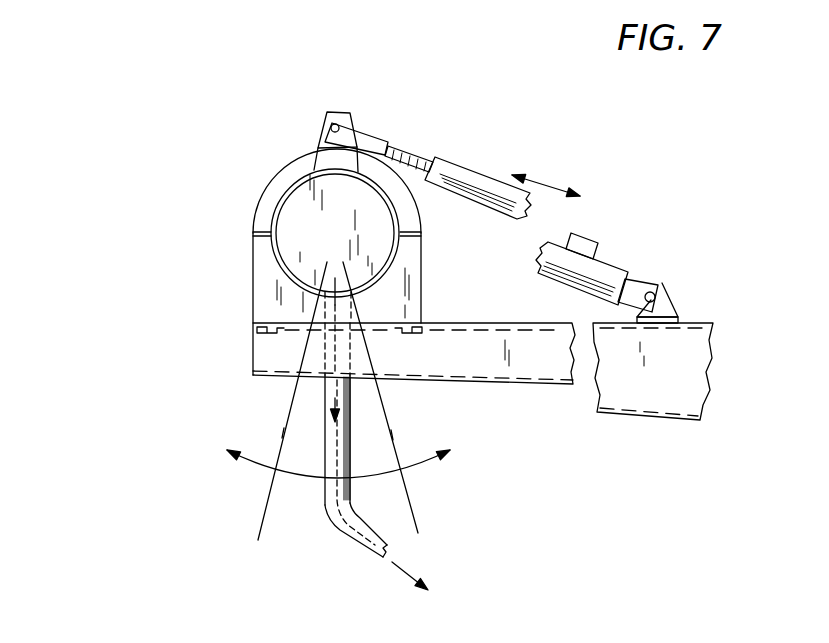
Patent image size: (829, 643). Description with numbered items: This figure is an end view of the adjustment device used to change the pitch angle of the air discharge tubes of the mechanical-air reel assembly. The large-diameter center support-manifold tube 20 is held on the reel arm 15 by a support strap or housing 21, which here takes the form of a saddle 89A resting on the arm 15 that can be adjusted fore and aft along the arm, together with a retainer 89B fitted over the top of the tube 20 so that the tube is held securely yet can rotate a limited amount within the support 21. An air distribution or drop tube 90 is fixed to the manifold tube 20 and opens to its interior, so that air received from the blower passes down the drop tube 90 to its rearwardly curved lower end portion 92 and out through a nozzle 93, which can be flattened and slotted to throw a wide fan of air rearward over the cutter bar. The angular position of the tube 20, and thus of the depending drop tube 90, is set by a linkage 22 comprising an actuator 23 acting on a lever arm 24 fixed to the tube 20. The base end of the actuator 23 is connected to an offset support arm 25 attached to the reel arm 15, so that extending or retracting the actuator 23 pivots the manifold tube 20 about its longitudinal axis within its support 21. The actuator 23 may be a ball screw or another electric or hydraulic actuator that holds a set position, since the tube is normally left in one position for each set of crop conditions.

The reel arm 15 is at (558, 372).
The center support-manifold tube 20 is at (396, 215).
The support strap or housing 21 is at (240, 256).
The linkage 22 is at (510, 256).
The actuator 23 is at (615, 265).
The lever arm 24 is at (322, 140).
The offset support arm 25 is at (667, 307).
The saddle 89A is at (262, 295).
The retainer 89B is at (276, 186).
The air distribution or drop tube 90 is at (322, 420).
The rearwardly curved lower end portion 92 is at (332, 518).
The nozzle 93 is at (378, 542).